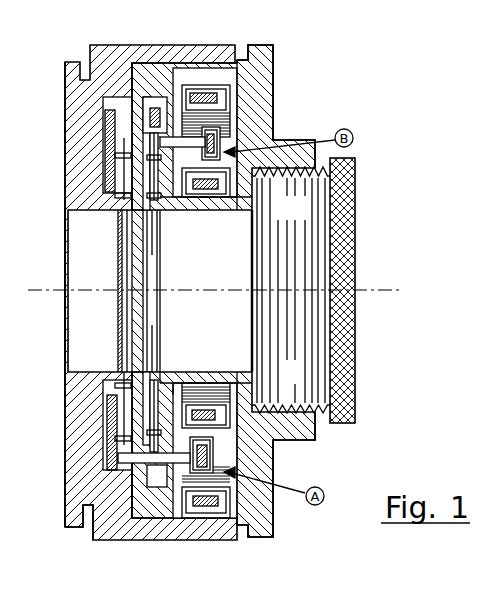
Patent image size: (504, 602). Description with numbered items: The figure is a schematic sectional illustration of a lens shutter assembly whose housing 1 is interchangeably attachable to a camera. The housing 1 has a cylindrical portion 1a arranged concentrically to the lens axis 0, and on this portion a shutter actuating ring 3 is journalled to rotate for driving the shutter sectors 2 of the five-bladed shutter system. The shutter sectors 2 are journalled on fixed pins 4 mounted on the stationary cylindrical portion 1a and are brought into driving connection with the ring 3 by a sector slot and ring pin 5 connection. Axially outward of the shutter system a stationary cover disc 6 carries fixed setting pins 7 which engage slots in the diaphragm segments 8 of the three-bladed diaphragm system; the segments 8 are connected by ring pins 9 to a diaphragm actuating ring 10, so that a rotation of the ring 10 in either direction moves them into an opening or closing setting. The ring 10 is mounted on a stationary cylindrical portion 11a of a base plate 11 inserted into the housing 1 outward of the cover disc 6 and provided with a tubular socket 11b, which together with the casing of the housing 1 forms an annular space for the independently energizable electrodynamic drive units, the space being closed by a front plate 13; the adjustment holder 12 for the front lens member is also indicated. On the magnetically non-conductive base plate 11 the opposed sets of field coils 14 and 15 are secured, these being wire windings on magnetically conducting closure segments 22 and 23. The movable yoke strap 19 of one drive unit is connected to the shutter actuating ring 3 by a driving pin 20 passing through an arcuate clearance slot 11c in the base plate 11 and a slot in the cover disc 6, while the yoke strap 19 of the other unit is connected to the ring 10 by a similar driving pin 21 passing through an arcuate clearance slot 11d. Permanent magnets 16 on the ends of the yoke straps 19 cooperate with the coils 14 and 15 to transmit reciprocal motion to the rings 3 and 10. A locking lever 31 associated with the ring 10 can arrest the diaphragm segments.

The lens axis 0 is at (387, 287).
The shutter housing 1 is at (67, 373).
The cylindrical portion 1a is at (108, 375).
The shutter sectors 2 is at (122, 327).
The shutter actuating ring 3 is at (110, 450).
The fixed pins 4 is at (113, 387).
The ring pin 5 is at (110, 442).
The cover disc 6 is at (137, 503).
The setting pins 7 is at (83, 525).
The diaphragm segments 8 is at (152, 317).
The ring pins 9 is at (160, 372).
The diaphragm actuating ring 10 is at (183, 380).
The base plate 11 is at (167, 513).
The cylindrical portion of base plate 11a is at (173, 200).
The tubular socket 11b is at (243, 213).
The arcuate clearance slot 11c is at (187, 503).
The arcuate clearance slot 11d is at (176, 133).
The adjustment holder 12 is at (246, 537).
The front plate 13 is at (253, 60).
The electromagnetic field coil 14 is at (220, 505).
The electromagnetic field coil 15 is at (207, 380).
The permanent magnets 16 is at (291, 290).
The yoke strap 19 is at (220, 458).
The driving pin 20 is at (140, 498).
The driving pin 21 is at (203, 97).
The closure segment 22 is at (218, 97).
The closure segment 23 is at (230, 382).
The locking lever 31 is at (155, 128).